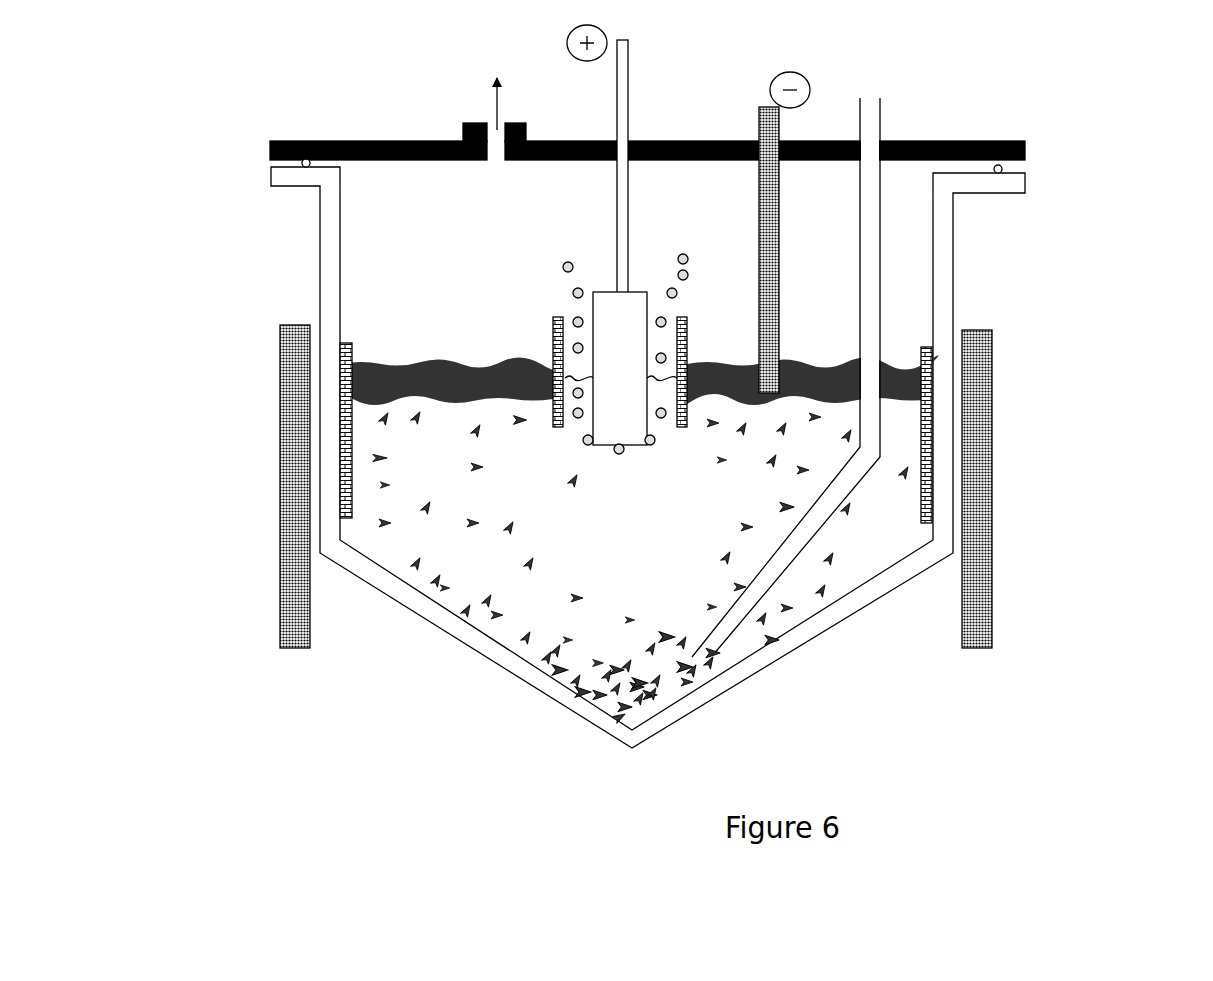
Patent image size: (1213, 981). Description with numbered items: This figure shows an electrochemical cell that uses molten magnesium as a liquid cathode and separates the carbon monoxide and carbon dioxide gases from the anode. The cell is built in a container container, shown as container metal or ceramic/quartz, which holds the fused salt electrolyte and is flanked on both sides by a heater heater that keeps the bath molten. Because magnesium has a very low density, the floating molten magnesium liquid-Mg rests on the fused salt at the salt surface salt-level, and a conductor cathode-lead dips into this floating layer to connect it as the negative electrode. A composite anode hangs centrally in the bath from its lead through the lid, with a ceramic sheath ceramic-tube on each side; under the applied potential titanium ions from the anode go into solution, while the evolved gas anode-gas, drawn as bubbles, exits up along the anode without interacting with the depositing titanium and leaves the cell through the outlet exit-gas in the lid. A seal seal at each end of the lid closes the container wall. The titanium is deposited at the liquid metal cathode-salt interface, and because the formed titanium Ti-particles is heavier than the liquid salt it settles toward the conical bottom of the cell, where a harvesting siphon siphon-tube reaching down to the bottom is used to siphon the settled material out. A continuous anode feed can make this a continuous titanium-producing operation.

The element container is at (955, 283).
The salt level salt-level is at (571, 385).
The element heater is at (279, 407).
The element seal is at (302, 168).
The exit gas exit-gas is at (451, 102).
The ceramic tube ceramic-tube is at (551, 324).
The CO/CO2 anode gas anode-gas is at (551, 277).
The cathode lead cathode-lead is at (817, 217).
The siphon tube siphon-tube is at (884, 125).
The liquid Mg liquid-Mg is at (908, 388).
The Ti particles Ti-particles is at (580, 668).